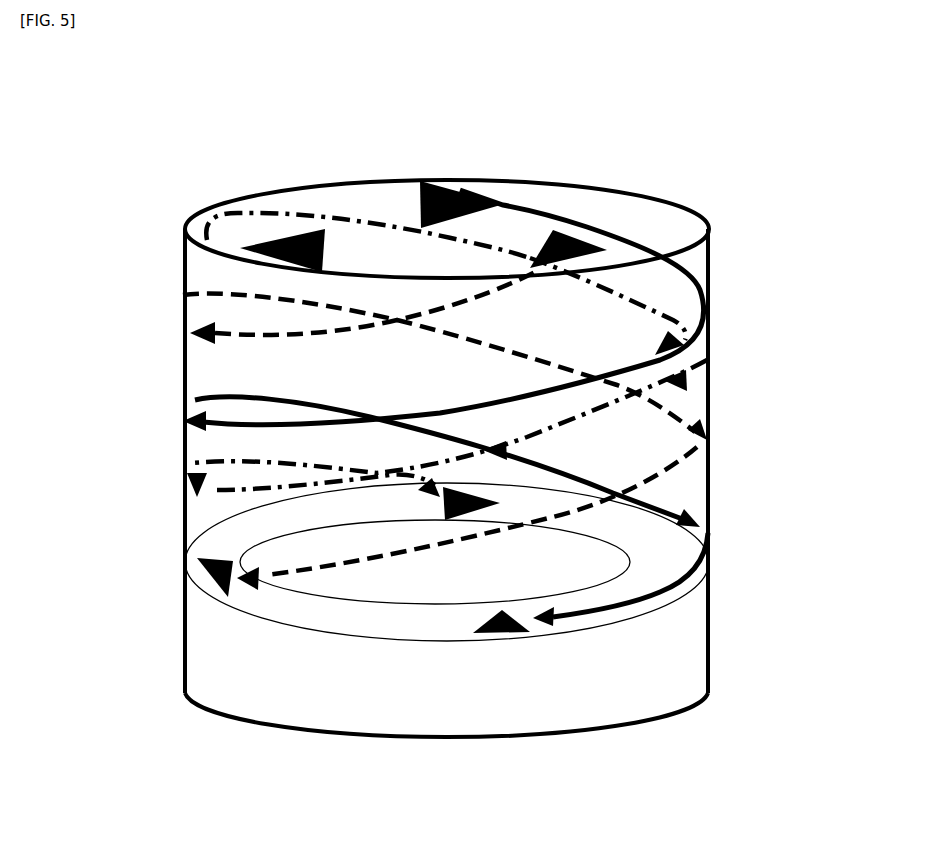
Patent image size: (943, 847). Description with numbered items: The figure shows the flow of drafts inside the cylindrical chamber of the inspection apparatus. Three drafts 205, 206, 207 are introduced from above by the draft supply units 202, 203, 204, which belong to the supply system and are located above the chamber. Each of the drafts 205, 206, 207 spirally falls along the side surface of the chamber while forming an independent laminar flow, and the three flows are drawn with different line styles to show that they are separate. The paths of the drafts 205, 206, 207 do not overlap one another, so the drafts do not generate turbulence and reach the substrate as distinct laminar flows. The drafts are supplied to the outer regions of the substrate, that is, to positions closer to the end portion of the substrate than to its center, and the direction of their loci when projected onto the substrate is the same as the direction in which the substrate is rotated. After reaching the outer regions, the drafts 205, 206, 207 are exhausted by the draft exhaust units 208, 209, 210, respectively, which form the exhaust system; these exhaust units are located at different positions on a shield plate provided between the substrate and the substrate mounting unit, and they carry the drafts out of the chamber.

The draft supply unit 202 is at (456, 181).
The draft supply unit 203 is at (600, 237).
The draft supply unit 204 is at (297, 230).
The draft 205 is at (533, 207).
The draft 206 is at (230, 350).
The draft 207 is at (362, 220).
The draft exhaust unit 208 is at (530, 633).
The draft exhaust unit 209 is at (210, 563).
The draft exhaust unit 210 is at (610, 484).